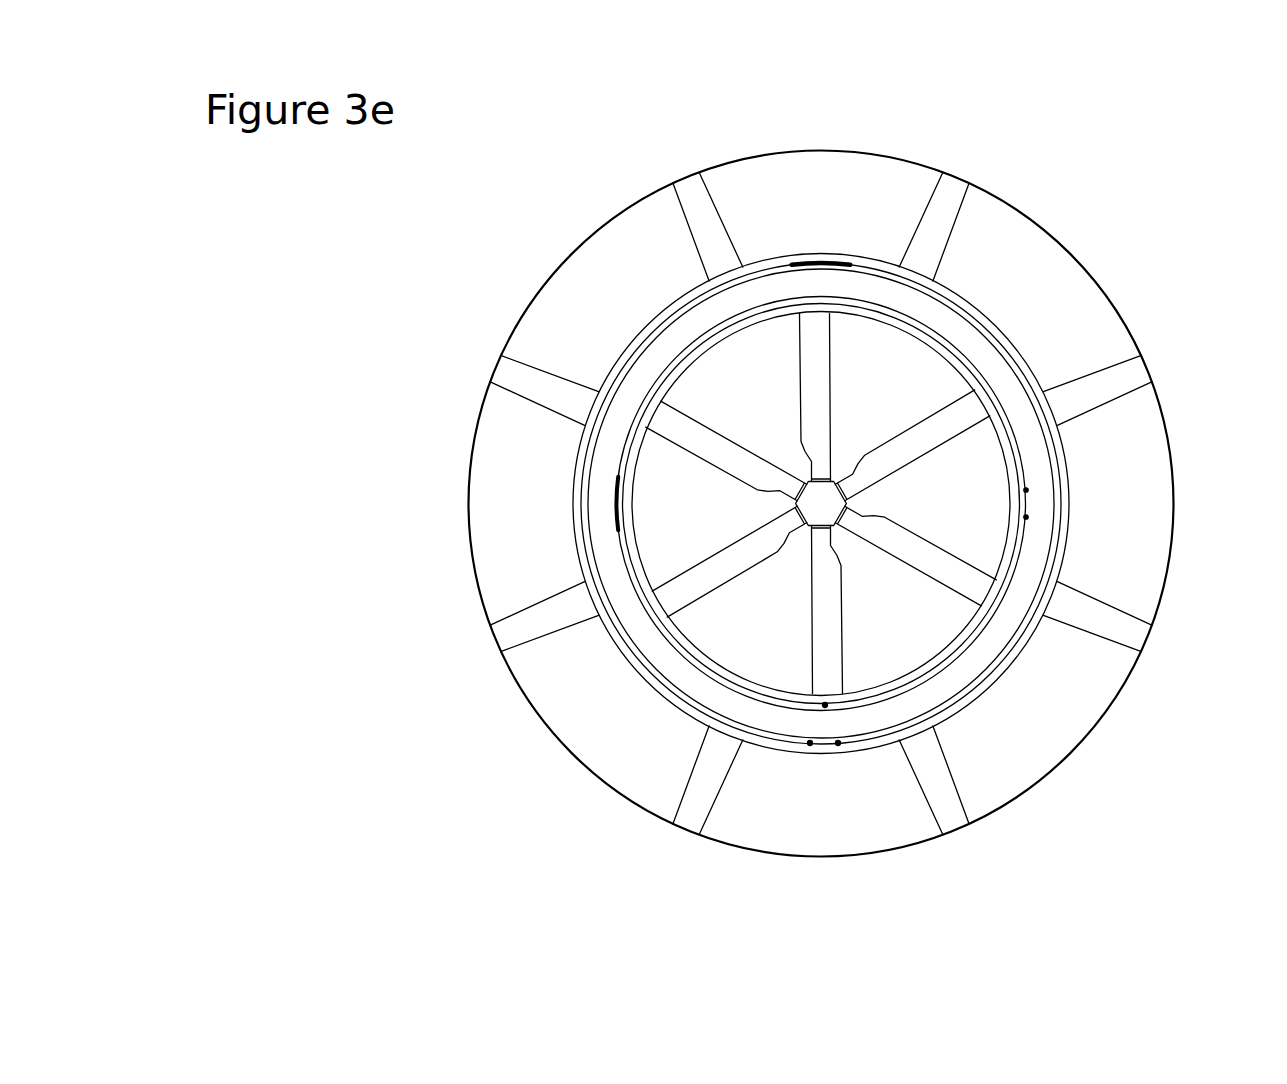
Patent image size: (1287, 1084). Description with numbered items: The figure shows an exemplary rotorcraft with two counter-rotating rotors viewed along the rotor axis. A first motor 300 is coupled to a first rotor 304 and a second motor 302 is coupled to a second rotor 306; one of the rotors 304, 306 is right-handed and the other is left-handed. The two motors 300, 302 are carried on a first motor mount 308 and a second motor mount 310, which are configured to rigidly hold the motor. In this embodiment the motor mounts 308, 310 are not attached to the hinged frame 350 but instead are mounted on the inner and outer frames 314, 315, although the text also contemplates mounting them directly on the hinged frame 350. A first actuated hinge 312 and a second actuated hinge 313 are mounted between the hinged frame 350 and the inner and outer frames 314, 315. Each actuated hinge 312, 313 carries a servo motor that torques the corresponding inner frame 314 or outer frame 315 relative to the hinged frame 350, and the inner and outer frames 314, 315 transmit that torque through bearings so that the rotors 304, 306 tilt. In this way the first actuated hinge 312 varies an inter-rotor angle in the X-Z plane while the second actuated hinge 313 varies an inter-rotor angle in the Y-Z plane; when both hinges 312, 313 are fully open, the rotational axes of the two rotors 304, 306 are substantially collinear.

The first motor 300 is at (1062, 502).
The second motor 302 is at (838, 743).
The first rotor 304 is at (680, 429).
The second rotor 306 is at (942, 218).
The first motor mount 308 is at (1040, 503).
The second motor mount 310 is at (826, 728).
The first actuated hinge 312 is at (600, 512).
The second actuated hinge 313 is at (819, 283).
The inner frame 314 is at (635, 569).
The outer frame 315 is at (1029, 369).
The hinged frame 350 is at (657, 658).